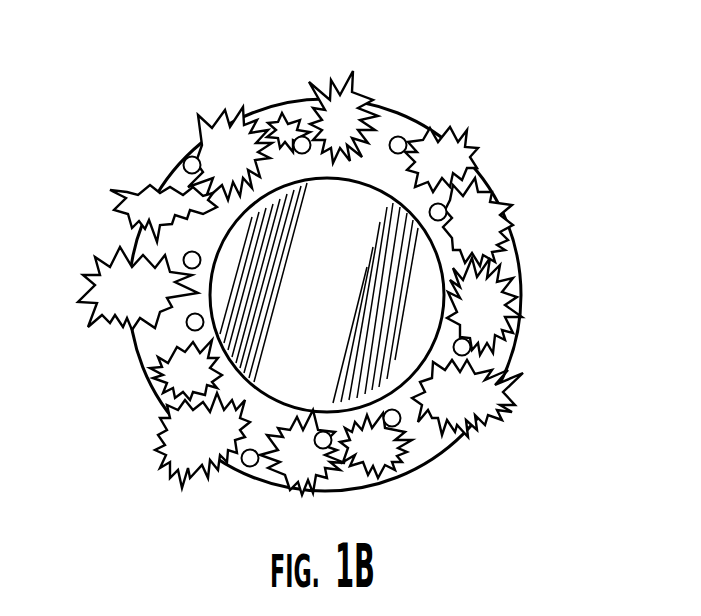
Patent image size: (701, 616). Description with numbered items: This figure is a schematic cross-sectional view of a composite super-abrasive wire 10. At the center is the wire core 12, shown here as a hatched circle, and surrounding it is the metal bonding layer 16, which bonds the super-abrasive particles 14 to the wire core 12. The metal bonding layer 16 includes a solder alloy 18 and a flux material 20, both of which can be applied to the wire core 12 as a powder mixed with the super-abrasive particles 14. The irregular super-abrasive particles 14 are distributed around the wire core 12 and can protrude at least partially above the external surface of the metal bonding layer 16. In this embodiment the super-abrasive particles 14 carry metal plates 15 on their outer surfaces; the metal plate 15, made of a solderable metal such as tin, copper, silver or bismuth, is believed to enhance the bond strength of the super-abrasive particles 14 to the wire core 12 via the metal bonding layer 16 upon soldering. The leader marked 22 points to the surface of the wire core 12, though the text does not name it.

The composite super-abrasive wire 10 is at (320, 250).
The wire core 12 is at (327, 295).
The super-abrasive particles 14 is at (480, 216).
The metal plate 15 is at (210, 115).
The metal bonding layer 16 is at (400, 108).
The solder alloy 18 is at (157, 338).
The flux material 20 is at (178, 160).
The core surface 22 is at (223, 243).